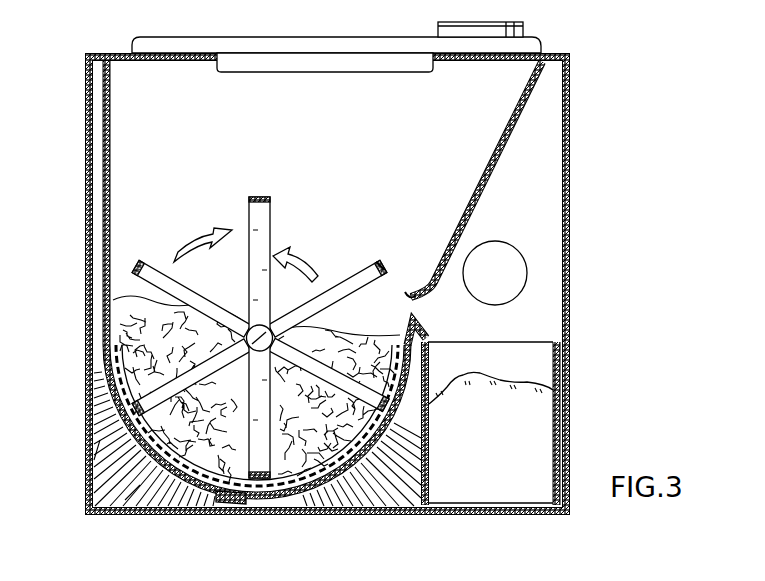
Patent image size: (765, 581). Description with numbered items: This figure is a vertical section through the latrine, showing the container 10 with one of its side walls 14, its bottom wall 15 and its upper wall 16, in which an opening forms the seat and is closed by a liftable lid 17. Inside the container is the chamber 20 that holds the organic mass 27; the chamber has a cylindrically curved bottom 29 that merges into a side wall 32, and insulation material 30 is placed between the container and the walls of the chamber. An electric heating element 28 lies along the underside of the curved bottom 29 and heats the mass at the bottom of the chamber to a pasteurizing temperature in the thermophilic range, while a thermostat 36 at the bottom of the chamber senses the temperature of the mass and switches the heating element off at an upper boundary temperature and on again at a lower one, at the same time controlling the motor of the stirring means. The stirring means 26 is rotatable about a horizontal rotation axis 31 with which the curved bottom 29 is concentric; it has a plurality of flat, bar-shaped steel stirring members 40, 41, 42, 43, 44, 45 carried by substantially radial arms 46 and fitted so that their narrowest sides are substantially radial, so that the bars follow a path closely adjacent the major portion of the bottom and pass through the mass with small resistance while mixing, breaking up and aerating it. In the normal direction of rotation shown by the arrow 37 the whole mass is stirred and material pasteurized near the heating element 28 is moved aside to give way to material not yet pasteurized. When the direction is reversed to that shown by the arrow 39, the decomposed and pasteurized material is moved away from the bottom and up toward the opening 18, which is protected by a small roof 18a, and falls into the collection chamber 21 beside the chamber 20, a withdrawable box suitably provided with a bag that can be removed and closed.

The container 10 is at (573, 113).
The side wall 14 is at (87, 181).
The bottom wall 15 is at (410, 509).
The upper wall 16 is at (543, 54).
The lid 17 is at (345, 42).
The opening 18 is at (412, 316).
The small roof 18a is at (421, 284).
The chamber 20 is at (290, 161).
The collection chamber 21 is at (557, 357).
The stirring means 26 is at (350, 273).
The organic mass 27 is at (113, 327).
The electric heating element 28 is at (133, 437).
The curved bottom 29 is at (190, 470).
The insulation material 30 is at (103, 466).
The horizontal rotation axis 31 is at (275, 338).
The side wall 32 is at (110, 128).
The thermostat 36 is at (230, 500).
The arrow 37 is at (193, 245).
The arrow 39 is at (303, 258).
The stirring member 40 is at (268, 196).
The stirring member 41 is at (389, 262).
The stirring member 42 is at (372, 395).
The stirring member 43 is at (259, 492).
The stirring member 44 is at (118, 408).
The stirring member 45 is at (134, 258).
The radial arm 46 is at (265, 233).